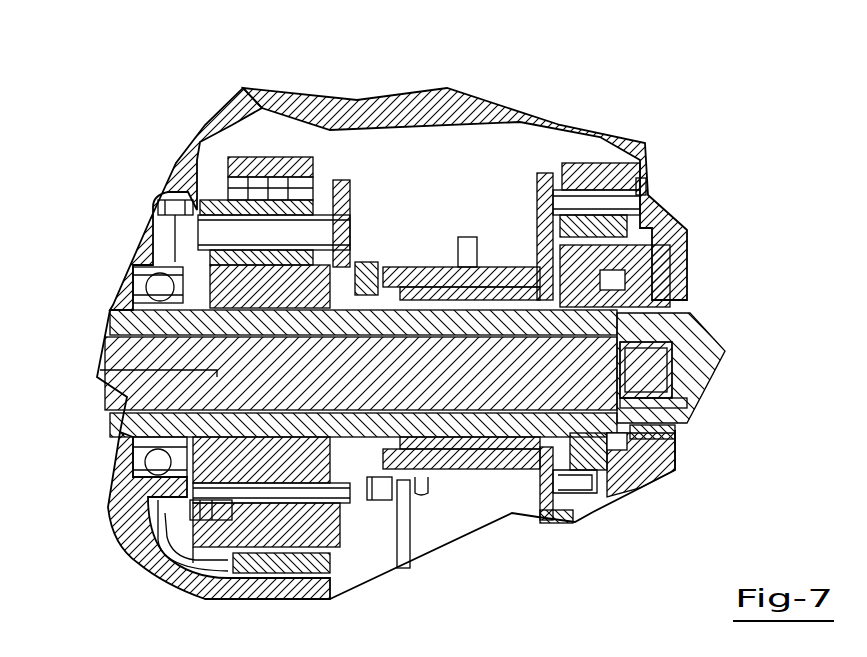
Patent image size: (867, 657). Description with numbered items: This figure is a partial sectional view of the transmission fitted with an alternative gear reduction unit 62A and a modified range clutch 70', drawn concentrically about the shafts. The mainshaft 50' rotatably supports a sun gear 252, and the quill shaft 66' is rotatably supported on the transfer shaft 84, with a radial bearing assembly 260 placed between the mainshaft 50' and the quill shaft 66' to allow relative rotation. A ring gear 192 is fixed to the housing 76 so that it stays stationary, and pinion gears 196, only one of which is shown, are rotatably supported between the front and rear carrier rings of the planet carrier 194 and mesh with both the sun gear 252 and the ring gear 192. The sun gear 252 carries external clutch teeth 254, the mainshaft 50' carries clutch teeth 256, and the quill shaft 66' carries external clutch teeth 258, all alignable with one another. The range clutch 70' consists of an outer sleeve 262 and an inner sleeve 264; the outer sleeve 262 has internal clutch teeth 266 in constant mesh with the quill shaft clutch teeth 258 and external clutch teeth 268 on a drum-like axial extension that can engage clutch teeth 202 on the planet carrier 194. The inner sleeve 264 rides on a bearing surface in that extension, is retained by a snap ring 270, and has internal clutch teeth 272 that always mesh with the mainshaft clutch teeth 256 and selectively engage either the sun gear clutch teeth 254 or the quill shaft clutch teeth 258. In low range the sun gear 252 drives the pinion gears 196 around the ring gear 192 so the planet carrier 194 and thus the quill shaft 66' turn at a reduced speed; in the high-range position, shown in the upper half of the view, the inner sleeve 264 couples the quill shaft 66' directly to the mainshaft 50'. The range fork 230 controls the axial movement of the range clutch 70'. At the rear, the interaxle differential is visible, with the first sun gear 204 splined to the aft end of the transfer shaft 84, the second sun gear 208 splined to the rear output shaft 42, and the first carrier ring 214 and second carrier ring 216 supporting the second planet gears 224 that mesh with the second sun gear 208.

The rear output shaft 42 is at (690, 342).
The mainshaft 50' is at (315, 307).
The gear reduction unit 62A is at (178, 185).
The quill shaft 66' is at (705, 370).
The range clutch 70' is at (386, 459).
The housing 76 is at (182, 565).
The transfer shaft 84 is at (123, 357).
The ring gear 192 is at (303, 600).
The planet carrier 194 is at (340, 127).
The pinion gears 196 is at (190, 199).
The clutch teeth 202 is at (330, 200).
The first sun gear 204 is at (580, 488).
The second sun gear 208 is at (617, 460).
The first carrier ring 214 is at (562, 157).
The second carrier ring 216 is at (638, 185).
The second planet gears 224 is at (595, 187).
The range fork 230 is at (408, 533).
The sun gear 252 is at (232, 518).
The clutch teeth 254 is at (567, 420).
The clutch teeth 256 is at (600, 365).
The clutch teeth 258 is at (512, 468).
The radial bearing assembly 260 is at (590, 350).
The outer sleeve 262 is at (507, 267).
The inner sleeve 264 is at (392, 483).
The internal clutch teeth 266 is at (620, 300).
The external clutch teeth 268 is at (410, 267).
The snap ring 270 is at (660, 437).
The internal clutch teeth 272 is at (620, 403).